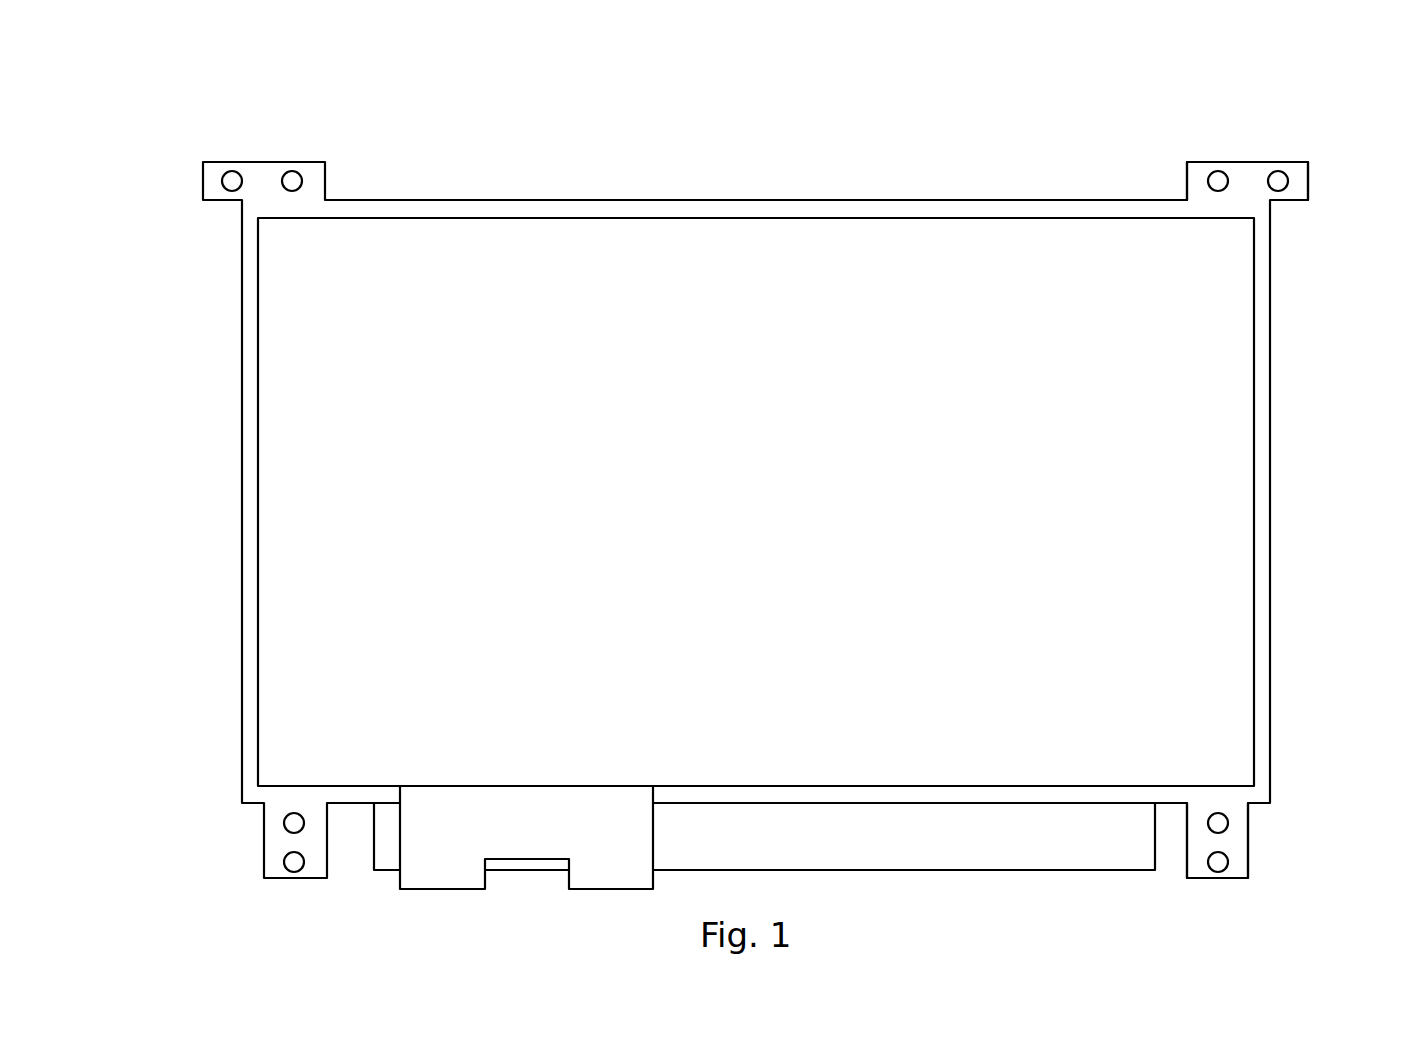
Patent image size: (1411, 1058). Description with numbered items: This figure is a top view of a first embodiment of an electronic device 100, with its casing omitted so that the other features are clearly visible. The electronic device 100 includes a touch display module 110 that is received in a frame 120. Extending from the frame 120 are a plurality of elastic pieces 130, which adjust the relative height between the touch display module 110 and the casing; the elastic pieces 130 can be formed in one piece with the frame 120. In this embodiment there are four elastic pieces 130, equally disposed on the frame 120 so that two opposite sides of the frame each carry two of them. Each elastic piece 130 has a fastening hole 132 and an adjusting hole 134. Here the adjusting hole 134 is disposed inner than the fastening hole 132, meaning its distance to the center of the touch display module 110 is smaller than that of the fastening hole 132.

The electronic device 100 is at (720, 464).
The touch display module 110 is at (1243, 348).
The frame 120 is at (1271, 302).
The elastic pieces 130 is at (1268, 162).
The fastening hole 132 is at (1308, 176).
The adjusting hole 134 is at (1210, 152).